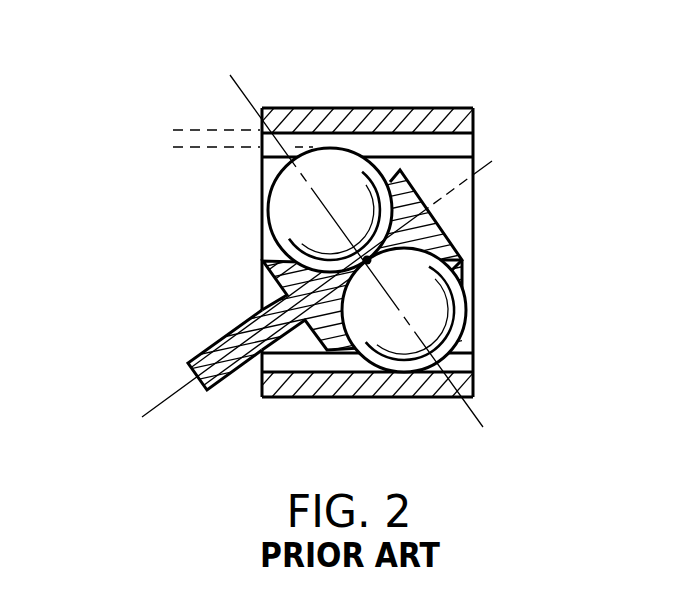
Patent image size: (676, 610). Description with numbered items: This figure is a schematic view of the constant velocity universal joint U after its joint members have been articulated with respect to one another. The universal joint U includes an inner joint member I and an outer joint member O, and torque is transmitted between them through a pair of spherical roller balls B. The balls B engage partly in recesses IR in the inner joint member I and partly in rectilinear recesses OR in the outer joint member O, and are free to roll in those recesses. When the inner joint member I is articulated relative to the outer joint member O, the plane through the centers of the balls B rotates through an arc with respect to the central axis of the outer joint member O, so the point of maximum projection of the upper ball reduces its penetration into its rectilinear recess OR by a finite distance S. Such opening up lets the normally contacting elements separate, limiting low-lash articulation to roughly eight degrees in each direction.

The outer joint member O is at (322, 106).
The rectilinear recesses OR is at (457, 150).
The recesses IR is at (263, 280).
The inner joint member I is at (196, 360).
The spherical roller balls B is at (269, 216).
The universal joint U is at (231, 94).
The finite distance S is at (186, 180).